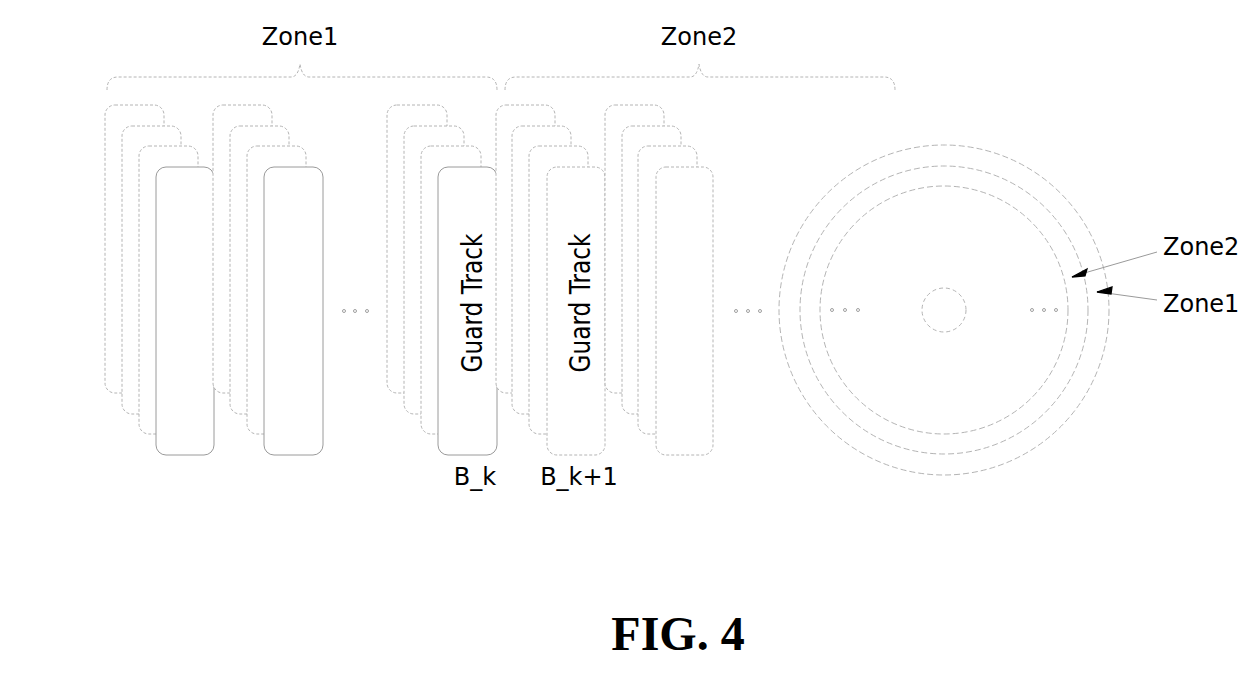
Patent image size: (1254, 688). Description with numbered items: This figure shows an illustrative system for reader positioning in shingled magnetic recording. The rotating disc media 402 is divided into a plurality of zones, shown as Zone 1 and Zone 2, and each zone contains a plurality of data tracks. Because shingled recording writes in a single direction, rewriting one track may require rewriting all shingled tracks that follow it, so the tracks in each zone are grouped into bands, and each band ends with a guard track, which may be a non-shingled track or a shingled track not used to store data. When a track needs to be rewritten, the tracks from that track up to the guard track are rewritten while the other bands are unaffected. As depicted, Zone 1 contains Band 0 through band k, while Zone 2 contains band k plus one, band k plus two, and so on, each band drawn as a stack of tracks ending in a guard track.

The rotating disc media 402 is at (959, 147).
The track band B_ 0 is at (160, 298).
The track band B_ 1 is at (269, 298).
The track band B_k+ 2 is at (670, 298).